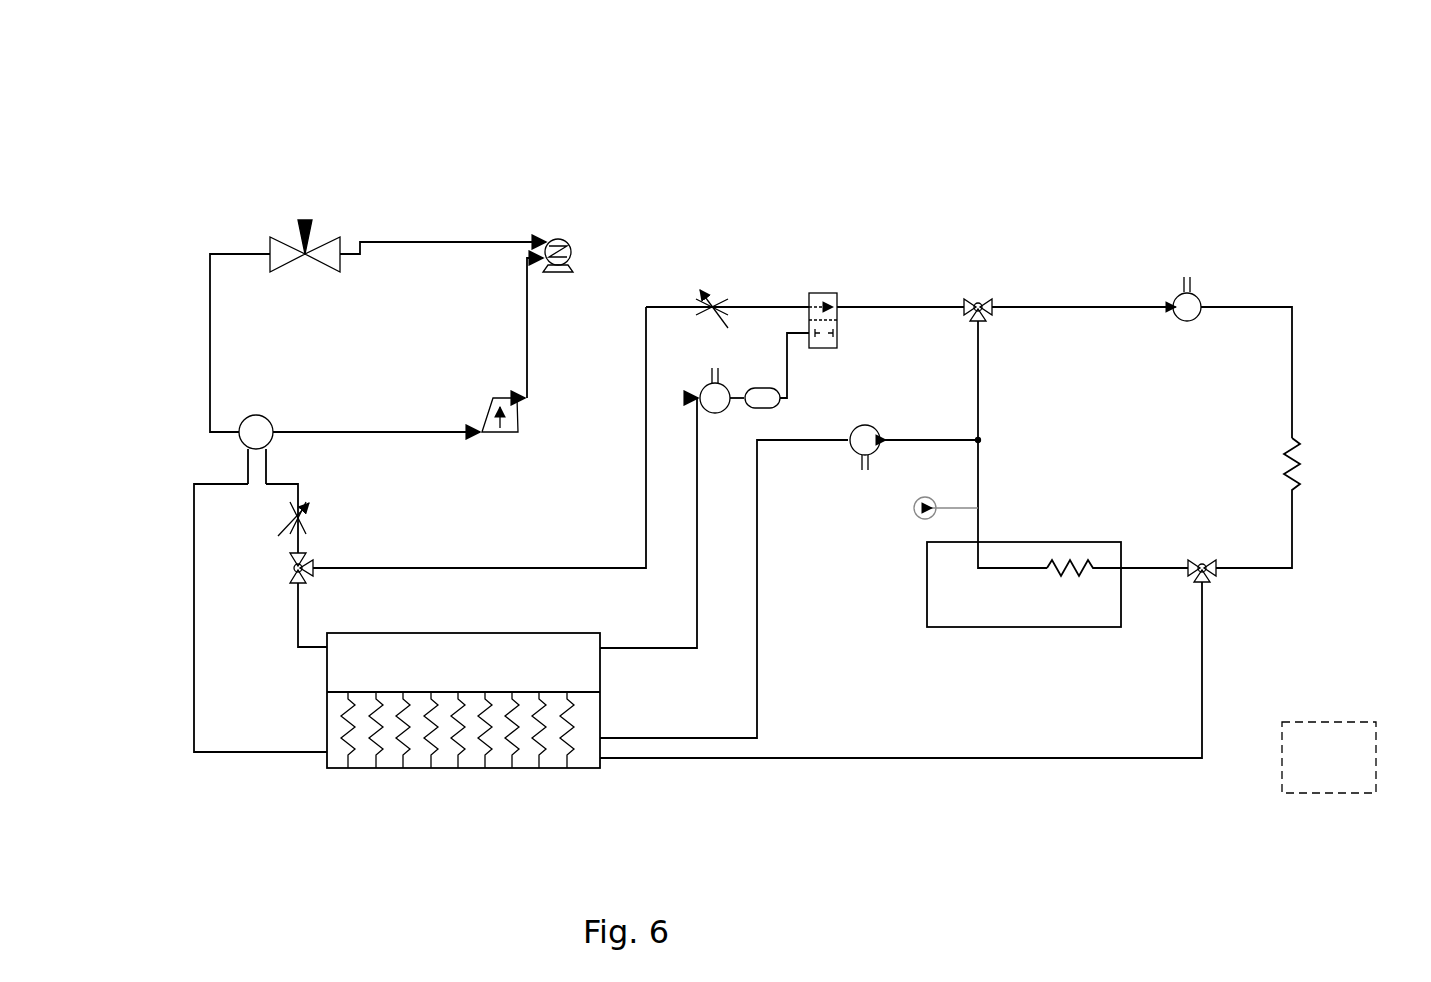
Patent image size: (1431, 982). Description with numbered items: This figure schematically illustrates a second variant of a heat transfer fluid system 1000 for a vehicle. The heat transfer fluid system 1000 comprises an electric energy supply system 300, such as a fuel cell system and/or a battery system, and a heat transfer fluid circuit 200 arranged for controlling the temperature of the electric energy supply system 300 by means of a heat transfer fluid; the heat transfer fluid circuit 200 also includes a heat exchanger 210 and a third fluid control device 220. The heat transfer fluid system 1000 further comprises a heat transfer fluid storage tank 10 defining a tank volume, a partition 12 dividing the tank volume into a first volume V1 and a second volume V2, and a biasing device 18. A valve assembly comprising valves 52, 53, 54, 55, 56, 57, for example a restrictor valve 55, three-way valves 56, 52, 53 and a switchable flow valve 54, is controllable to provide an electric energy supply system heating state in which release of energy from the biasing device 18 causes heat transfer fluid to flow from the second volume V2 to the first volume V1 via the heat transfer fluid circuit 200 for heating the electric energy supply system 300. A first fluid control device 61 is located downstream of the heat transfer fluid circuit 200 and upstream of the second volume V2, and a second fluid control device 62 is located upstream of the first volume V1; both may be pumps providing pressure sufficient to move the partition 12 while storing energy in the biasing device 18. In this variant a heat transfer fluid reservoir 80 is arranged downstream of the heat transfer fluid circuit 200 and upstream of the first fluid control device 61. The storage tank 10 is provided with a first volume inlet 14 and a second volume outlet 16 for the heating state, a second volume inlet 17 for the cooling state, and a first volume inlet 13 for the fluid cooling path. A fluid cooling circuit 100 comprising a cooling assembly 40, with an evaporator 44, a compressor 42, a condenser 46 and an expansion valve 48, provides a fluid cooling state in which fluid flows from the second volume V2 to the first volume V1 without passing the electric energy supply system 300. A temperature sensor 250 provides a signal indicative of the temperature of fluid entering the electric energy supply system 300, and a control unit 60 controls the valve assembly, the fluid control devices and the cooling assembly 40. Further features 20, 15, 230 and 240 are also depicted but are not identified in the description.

The heat transfer fluid system 1000 is at (168, 121).
The fluid cooling circuit 100 is at (162, 454).
The heat transfer fluid circuit 200 is at (1329, 278).
The cooling assembly 40 is at (190, 333).
The compressor 42 is at (515, 415).
The evaporator 44 is at (262, 416).
The condenser 46 is at (546, 245).
The expansion valve 48 is at (314, 215).
The reservoir 20 is at (194, 582).
The heat transfer fluid storage tank 10 is at (327, 720).
The partition 12 is at (580, 692).
The first volume inlet 13 is at (325, 752).
The first volume inlet 14 is at (601, 761).
The middle outlet pipe 15 is at (605, 738).
The second volume outlet 16 is at (295, 662).
The second volume inlet 17 is at (608, 648).
The biasing device 18 is at (412, 757).
The first volume V1 is at (455, 740).
The second volume V2 is at (447, 662).
The three-way valve 52 is at (990, 303).
The three-way valve 53 is at (1210, 558).
The switchable flow valve 54 is at (828, 291).
The restrictor valve 55 is at (708, 290).
The three-way valve 56 is at (314, 560).
The valve 57 is at (314, 505).
The first fluid control device 61 is at (703, 386).
The second fluid control device 62 is at (851, 433).
The heat transfer fluid reservoir 80 is at (760, 389).
The heat exchanger 210 is at (1300, 448).
The third fluid control device 220 is at (1197, 292).
The supply line 230 is at (972, 316).
The junction 240 is at (975, 438).
The temperature sensor 250 is at (912, 505).
The electric energy supply system 300 is at (1068, 627).
The control unit 60 is at (1329, 757).